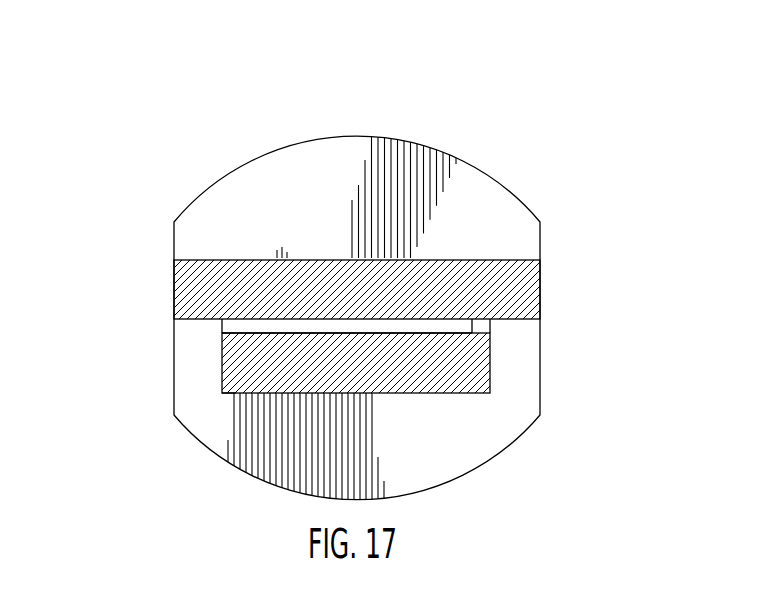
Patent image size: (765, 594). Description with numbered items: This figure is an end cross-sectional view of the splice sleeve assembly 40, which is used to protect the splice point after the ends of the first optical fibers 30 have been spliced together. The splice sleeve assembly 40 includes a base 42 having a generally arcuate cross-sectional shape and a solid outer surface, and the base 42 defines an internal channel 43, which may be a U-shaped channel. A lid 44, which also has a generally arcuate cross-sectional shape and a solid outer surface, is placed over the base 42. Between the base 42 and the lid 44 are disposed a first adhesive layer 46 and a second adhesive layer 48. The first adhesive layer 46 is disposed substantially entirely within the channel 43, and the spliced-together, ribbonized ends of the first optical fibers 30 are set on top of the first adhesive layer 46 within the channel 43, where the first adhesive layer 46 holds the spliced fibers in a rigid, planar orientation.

The splice sleeve assembly 40 is at (203, 143).
The base 42 is at (463, 434).
The internal channel 43 is at (224, 397).
The lid 44 is at (483, 208).
The first adhesive layer 46 is at (470, 363).
The second adhesive layer 48 is at (527, 291).
The first optical fibers 30 is at (241, 325).